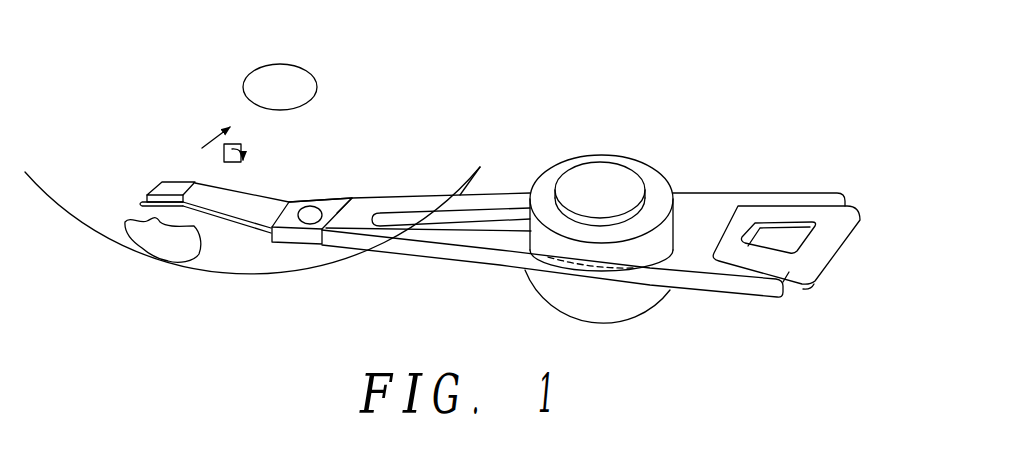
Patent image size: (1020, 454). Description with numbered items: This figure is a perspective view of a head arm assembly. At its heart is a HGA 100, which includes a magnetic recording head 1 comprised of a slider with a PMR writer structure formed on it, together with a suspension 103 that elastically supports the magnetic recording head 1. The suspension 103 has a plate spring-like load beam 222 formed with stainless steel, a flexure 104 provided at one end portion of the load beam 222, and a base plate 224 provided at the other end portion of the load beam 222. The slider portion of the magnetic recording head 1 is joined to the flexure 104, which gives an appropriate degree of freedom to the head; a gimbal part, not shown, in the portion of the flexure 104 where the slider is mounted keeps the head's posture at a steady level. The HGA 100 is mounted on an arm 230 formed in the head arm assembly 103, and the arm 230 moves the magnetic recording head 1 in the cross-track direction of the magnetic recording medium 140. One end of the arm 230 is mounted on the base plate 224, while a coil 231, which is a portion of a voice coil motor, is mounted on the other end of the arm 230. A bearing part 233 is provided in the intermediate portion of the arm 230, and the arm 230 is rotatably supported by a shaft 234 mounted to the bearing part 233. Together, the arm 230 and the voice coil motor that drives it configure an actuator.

The magnetic recording head 1 is at (161, 180).
The HGA 100 is at (256, 252).
The suspension 103 is at (460, 154).
The flexure 104 is at (148, 198).
The magnetic recording medium 140 is at (138, 258).
The load beam 222 is at (268, 204).
The base plate 224 is at (340, 198).
The arm 230 is at (416, 252).
The coil 231 is at (827, 258).
The bearing part 233 is at (551, 174).
The shaft 234 is at (604, 173).